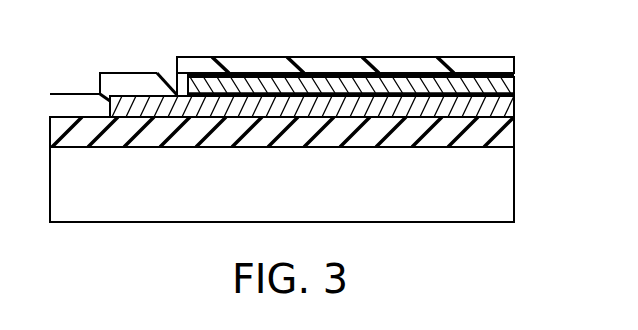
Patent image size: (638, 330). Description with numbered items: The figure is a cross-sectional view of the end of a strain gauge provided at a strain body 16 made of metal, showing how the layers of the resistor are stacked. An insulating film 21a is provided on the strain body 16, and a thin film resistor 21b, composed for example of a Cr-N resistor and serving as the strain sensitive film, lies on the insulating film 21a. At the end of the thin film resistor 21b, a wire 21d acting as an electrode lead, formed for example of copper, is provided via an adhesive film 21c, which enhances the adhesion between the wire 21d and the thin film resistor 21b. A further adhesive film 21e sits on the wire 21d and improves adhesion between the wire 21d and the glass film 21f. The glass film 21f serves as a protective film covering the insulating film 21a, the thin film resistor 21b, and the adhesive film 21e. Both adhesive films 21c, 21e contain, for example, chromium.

The strain body 16 is at (503, 205).
The insulating film 21a is at (507, 137).
The thin film resistor 21b is at (508, 110).
The adhesive film 21c is at (502, 88).
The wire 21d is at (514, 75).
The adhesive film 21e is at (515, 60).
The glass film 21f is at (140, 77).